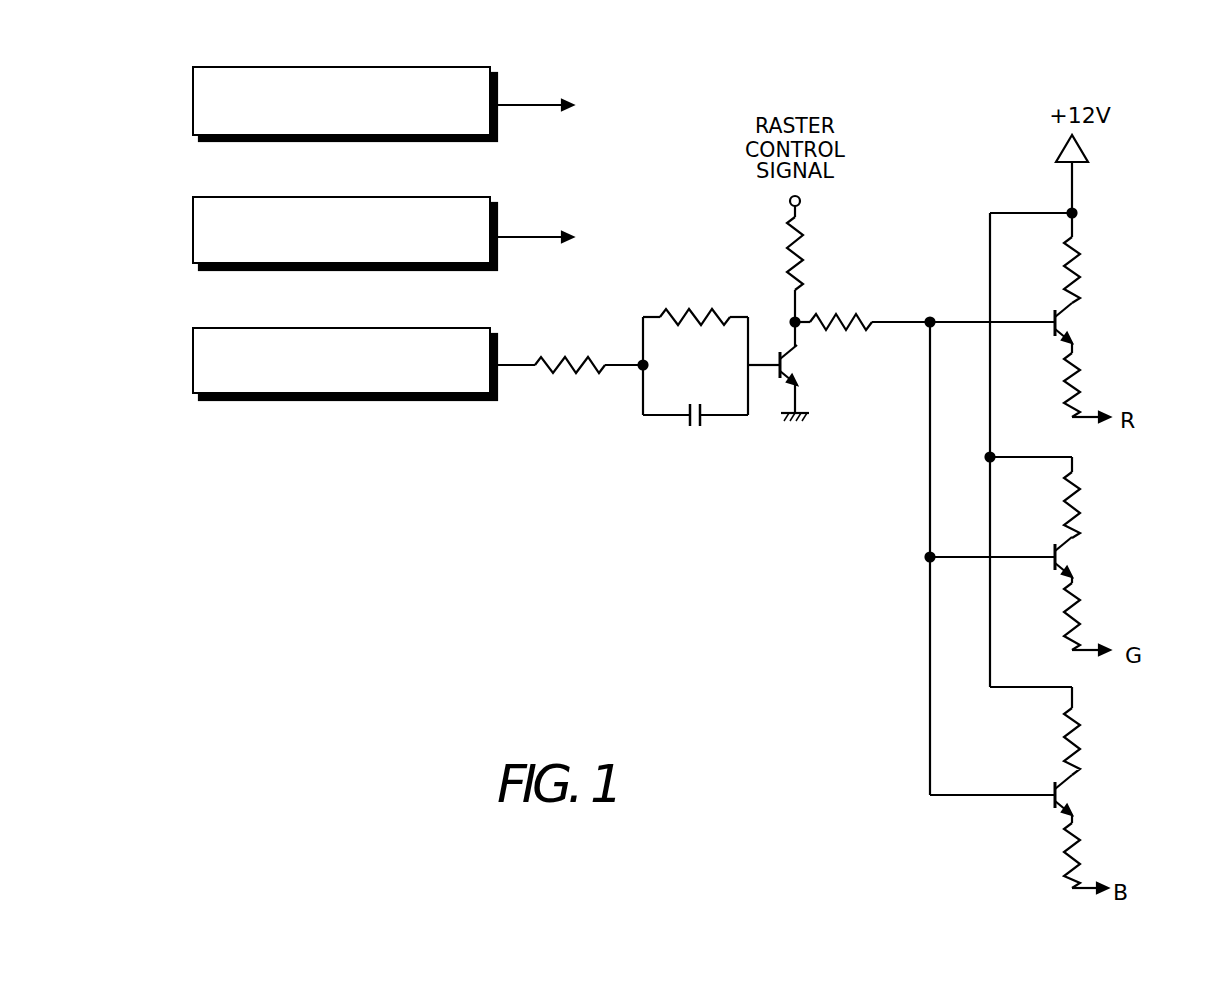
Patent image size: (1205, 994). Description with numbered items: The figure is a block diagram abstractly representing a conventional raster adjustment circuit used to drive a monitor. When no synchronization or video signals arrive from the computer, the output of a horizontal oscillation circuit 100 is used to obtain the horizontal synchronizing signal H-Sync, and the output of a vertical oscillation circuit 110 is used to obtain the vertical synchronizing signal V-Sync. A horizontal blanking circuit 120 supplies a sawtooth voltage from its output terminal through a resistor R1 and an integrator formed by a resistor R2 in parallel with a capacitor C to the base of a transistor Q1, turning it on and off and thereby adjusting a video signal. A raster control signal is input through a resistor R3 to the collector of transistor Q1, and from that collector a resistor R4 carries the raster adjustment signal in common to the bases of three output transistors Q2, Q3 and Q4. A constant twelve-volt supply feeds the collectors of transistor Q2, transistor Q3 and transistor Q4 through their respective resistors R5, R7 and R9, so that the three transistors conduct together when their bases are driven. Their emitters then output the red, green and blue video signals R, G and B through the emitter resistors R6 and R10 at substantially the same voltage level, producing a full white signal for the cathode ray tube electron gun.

The horizontal oscillation circuit 100 is at (457, 67).
The vertical oscillation circuit 110 is at (457, 197).
The horizontal blanking circuit 120 is at (453, 328).
The resistor R1 is at (570, 353).
The resistor R2 is at (695, 304).
The capacitor C is at (695, 400).
The transistor Q1 is at (790, 371).
The resistor R3 is at (814, 259).
The resistor R4 is at (862, 308).
The resistor R5 is at (1093, 270).
The transistor Q2 is at (1081, 328).
The resistor R6 is at (1093, 504).
The resistor R7 is at (1094, 497).
The transistor Q3 is at (1083, 560).
The resistor R9 is at (1090, 731).
The transistor Q4 is at (1080, 799).
The resistor R10 is at (1097, 858).